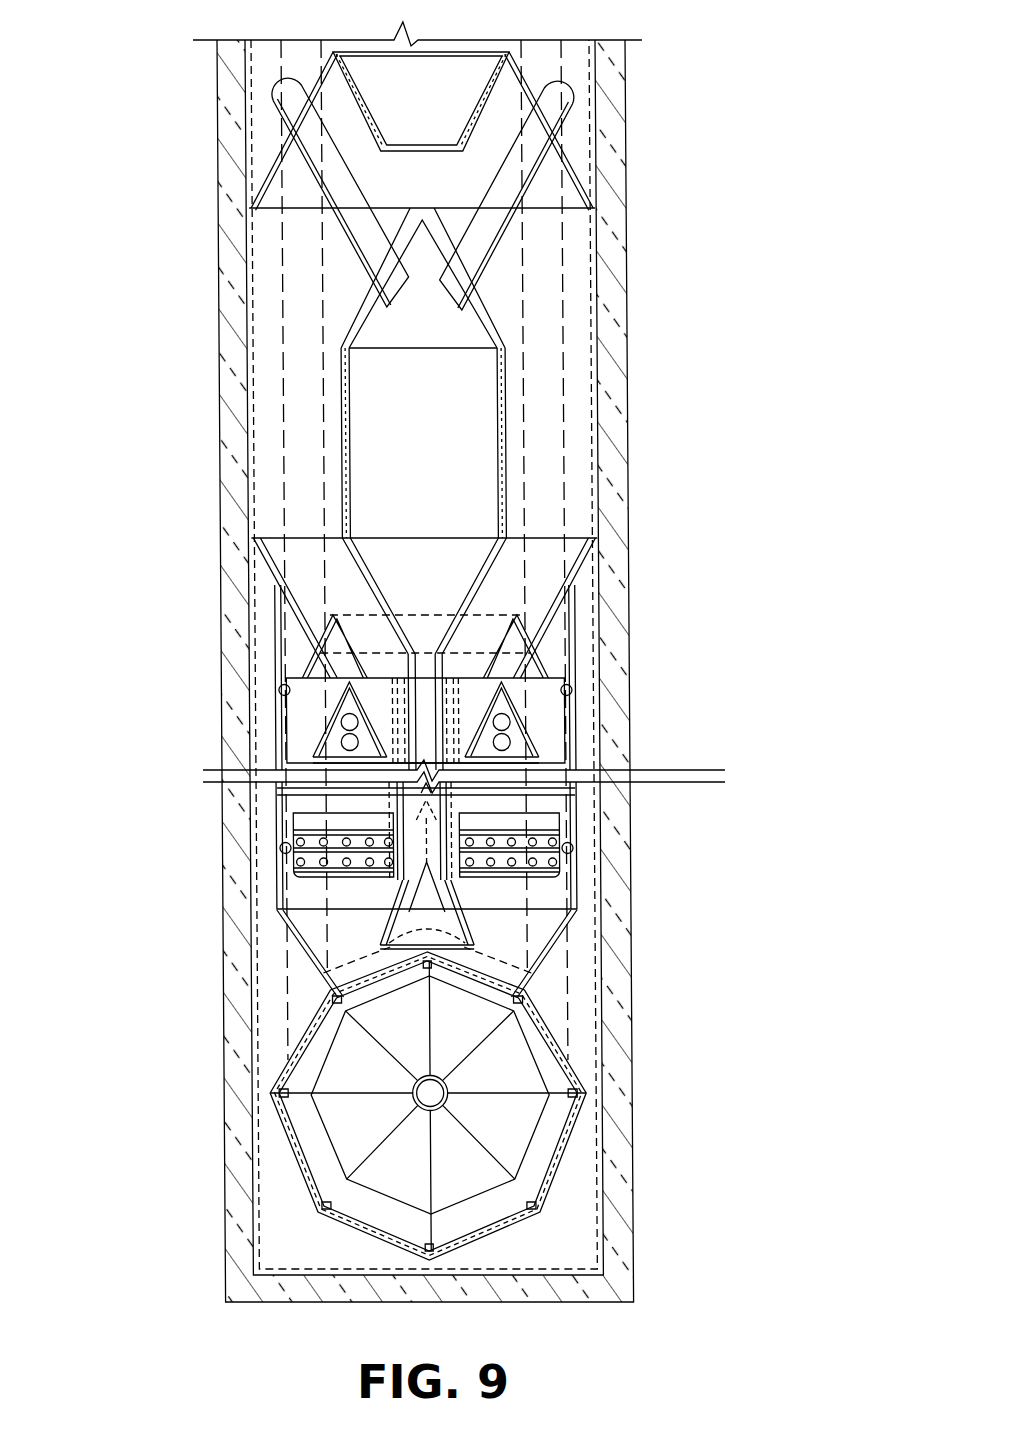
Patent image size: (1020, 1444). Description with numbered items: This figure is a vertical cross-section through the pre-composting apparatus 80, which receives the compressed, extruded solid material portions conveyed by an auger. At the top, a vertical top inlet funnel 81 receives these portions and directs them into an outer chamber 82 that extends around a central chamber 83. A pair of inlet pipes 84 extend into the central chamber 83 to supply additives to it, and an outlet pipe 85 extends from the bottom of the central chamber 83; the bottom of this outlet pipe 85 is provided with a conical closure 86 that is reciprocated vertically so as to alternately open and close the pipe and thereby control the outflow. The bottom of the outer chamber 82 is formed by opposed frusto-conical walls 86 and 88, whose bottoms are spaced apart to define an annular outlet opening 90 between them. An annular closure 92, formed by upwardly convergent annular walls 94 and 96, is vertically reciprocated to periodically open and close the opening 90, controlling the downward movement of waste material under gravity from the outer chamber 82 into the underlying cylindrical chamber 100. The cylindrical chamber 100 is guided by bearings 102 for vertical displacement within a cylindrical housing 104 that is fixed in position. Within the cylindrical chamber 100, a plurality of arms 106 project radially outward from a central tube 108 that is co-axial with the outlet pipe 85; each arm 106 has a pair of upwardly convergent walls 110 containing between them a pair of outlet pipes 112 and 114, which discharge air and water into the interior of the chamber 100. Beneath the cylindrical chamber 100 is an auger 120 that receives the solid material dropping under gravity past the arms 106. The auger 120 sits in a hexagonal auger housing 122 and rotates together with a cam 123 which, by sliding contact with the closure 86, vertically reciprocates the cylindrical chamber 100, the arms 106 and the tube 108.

The pre-composting apparatus 80 is at (121, 785).
The vertical top inlet funnel 81 is at (440, 90).
The outer chamber 82 is at (576, 295).
The central chamber 83 is at (456, 443).
The inlet pipes 84 is at (317, 179).
The outlet pipe 85 is at (431, 705).
The conical closure 86 is at (283, 607).
The frusto-conical wall 88 is at (346, 614).
The annular outlet opening 90 is at (296, 684).
The annular closure 92 is at (477, 607).
The annular wall 94 is at (539, 622).
The annular wall 96 is at (517, 607).
The cylindrical chamber 100 is at (539, 737).
The bearings 102 is at (568, 690).
The cylindrical housing 104 is at (557, 810).
The arm 106 is at (303, 722).
The central tube 108 is at (325, 819).
The upwardly convergent walls 110 is at (312, 744).
The outlet pipe 112 is at (516, 722).
The outlet pipe 114 is at (526, 757).
The auger 120 is at (503, 1072).
The hexagonal auger housing 122 is at (499, 1217).
The cam 123 is at (401, 977).